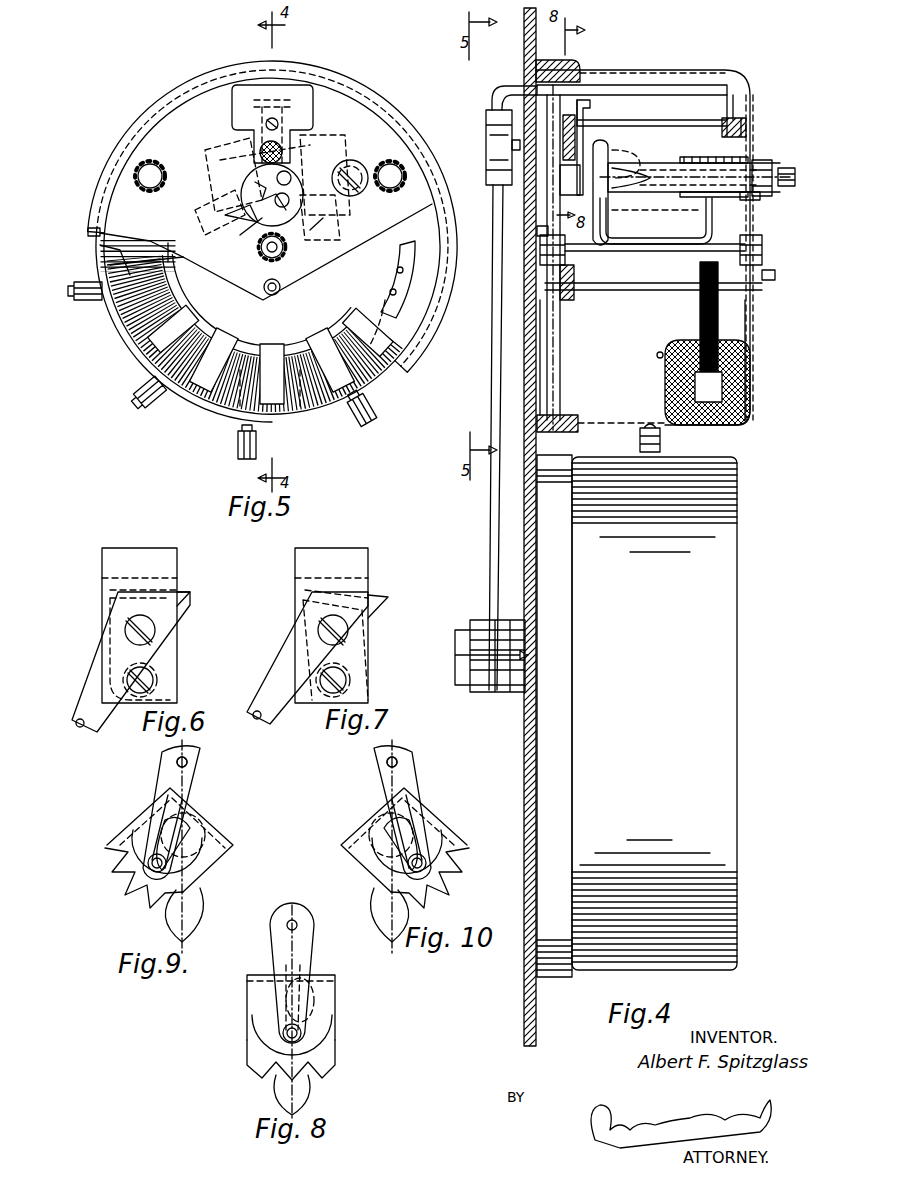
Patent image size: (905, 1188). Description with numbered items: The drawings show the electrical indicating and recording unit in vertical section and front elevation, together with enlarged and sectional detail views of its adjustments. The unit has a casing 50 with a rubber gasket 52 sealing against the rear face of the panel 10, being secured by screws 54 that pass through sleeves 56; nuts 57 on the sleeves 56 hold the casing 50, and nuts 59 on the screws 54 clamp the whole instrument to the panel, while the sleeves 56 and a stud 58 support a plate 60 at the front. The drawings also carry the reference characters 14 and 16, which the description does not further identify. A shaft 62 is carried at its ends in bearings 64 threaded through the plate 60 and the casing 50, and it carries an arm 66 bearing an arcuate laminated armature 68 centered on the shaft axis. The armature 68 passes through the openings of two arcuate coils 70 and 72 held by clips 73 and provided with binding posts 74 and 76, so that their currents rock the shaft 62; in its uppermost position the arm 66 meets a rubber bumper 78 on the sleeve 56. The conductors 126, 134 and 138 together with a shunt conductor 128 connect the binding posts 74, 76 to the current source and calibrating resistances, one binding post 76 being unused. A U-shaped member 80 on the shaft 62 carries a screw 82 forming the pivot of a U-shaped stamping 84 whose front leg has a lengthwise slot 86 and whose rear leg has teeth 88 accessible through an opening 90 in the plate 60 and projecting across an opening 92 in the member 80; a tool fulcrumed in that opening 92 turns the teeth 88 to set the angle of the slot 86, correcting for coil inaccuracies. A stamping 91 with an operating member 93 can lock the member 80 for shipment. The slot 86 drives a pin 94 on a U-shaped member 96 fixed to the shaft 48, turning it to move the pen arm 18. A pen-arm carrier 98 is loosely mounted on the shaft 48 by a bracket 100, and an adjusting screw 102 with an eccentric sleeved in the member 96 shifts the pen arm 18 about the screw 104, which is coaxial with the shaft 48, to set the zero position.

In FIG. 4, the panel 10 is at (540, 1035).
In FIG. 4, the casing 14 is at (725, 782).
In FIG. 5, the bracket 16 is at (433, 365).
In FIG. 4, the bracket 16 is at (762, 360).
In FIG. 4, the pen arm 18 is at (490, 522).
In FIG. 5, the shaft 48 is at (342, 98).
In FIG. 4, the shaft 48 is at (640, 123).
In FIG. 9, the shaft 48 is at (188, 762).
In FIG. 10, the shaft 48 is at (397, 760).
In FIG. 8, the shaft 48 is at (298, 925).
In FIG. 5, the casing 50 is at (135, 345).
In FIG. 4, the casing 50 is at (750, 318).
In FIG. 5, the rubber gasket 52 is at (426, 301).
In FIG. 4, the rubber gasket 52 is at (578, 423).
In FIG. 5, the screws 54 is at (143, 170).
In FIG. 4, the screws 54 is at (500, 175).
In FIG. 4, the sleeves 56 is at (748, 150).
In FIG. 4, the nuts 57 is at (762, 194).
In FIG. 5, the stud 58 is at (277, 294).
In FIG. 4, the stud 58 is at (645, 291).
In FIG. 4, the nuts 59 is at (770, 170).
In FIG. 5, the plate 60 is at (300, 280).
In FIG. 4, the plate 60 is at (575, 280).
In FIG. 4, the shaft 62 is at (745, 244).
In FIG. 5, the bearings 64 is at (291, 252).
In FIG. 4, the bearings 64 is at (560, 268).
In FIG. 5, the arm 66 is at (410, 243).
In FIG. 4, the arm 66 is at (560, 230).
In FIG. 5, the arcuate armature 68 is at (431, 340).
In FIG. 4, the arcuate armature 68 is at (720, 338).
In FIG. 5, the coil 70 is at (110, 310).
In FIG. 5, the coil 72 is at (320, 415).
In FIG. 4, the coil 72 is at (750, 410).
In FIG. 5, the clips 73 is at (120, 268).
In FIG. 4, the clips 73 is at (663, 380).
In FIG. 5, the binding posts 74 is at (72, 288).
In FIG. 5, the binding posts 76 is at (238, 452).
In FIG. 4, the binding posts 76 is at (662, 441).
In FIG. 4, the rubber bumper 78 is at (690, 157).
In FIG. 5, the U-shaped member 80 is at (215, 205).
In FIG. 4, the U-shaped member 80 is at (615, 230).
In FIG. 4, the screw 82 is at (614, 160).
In FIG. 9, the screw 82 is at (200, 836).
In FIG. 10, the screw 82 is at (374, 836).
In FIG. 8, the screw 82 is at (314, 1002).
In FIG. 5, the U-shaped stamping 84 is at (240, 160).
In FIG. 4, the U-shaped stamping 84 is at (606, 150).
In FIG. 9, the U-shaped stamping 84 is at (215, 860).
In FIG. 10, the U-shaped stamping 84 is at (360, 858).
In FIG. 8, the U-shaped stamping 84 is at (325, 1035).
In FIG. 5, the slot 86 is at (243, 207).
In FIG. 9, the slot 86 is at (205, 886).
In FIG. 10, the slot 86 is at (372, 886).
In FIG. 8, the slot 86 is at (260, 1045).
In FIG. 5, the teeth 88 is at (289, 199).
In FIG. 4, the teeth 88 is at (615, 178).
In FIG. 9, the teeth 88 is at (108, 866).
In FIG. 10, the teeth 88 is at (466, 855).
In FIG. 8, the teeth 88 is at (302, 1080).
In FIG. 5, the opening 90 is at (326, 238).
In FIG. 4, the opening 90 is at (547, 213).
In FIG. 5, the stamping 91 is at (336, 152).
In FIG. 5, the opening 92 is at (250, 215).
In FIG. 4, the opening 92 is at (670, 181).
In FIG. 9, the opening 92 is at (168, 922).
In FIG. 10, the opening 92 is at (378, 922).
In FIG. 8, the opening 92 is at (275, 1086).
In FIG. 5, the operating member 93 is at (354, 170).
In FIG. 4, the pin 94 is at (547, 178).
In FIG. 6, the pin 94 is at (86, 726).
In FIG. 7, the pin 94 is at (252, 716).
In FIG. 9, the pin 94 is at (205, 825).
In FIG. 10, the pin 94 is at (430, 825).
In FIG. 8, the pin 94 is at (302, 978).
In FIG. 5, the U-shaped member 96 is at (316, 140).
In FIG. 4, the U-shaped member 96 is at (585, 126).
In FIG. 6, the U-shaped member 96 is at (92, 642).
In FIG. 7, the U-shaped member 96 is at (282, 642).
In FIG. 9, the U-shaped member 96 is at (195, 785).
In FIG. 10, the U-shaped member 96 is at (415, 785).
In FIG. 8, the U-shaped member 96 is at (285, 958).
In FIG. 5, the pen-arm carrier 98 is at (272, 95).
In FIG. 4, the pen-arm carrier 98 is at (595, 90).
In FIG. 6, the pen-arm carrier 98 is at (150, 562).
In FIG. 7, the pen-arm carrier 98 is at (335, 560).
In FIG. 4, the bracket 100 is at (600, 90).
In FIG. 5, the adjusting screw 102 is at (263, 146).
In FIG. 4, the adjusting screw 102 is at (498, 147).
In FIG. 6, the adjusting screw 102 is at (152, 675).
In FIG. 7, the adjusting screw 102 is at (346, 680).
In FIG. 6, the screw 104 is at (148, 624).
In FIG. 7, the screw 104 is at (346, 628).
In FIG. 5, the conductor 126 is at (165, 372).
In FIG. 5, the shunt conductor 128 is at (265, 350).
In FIG. 5, the conductor 134 is at (165, 235).
In FIG. 5, the conductor 138 is at (222, 400).